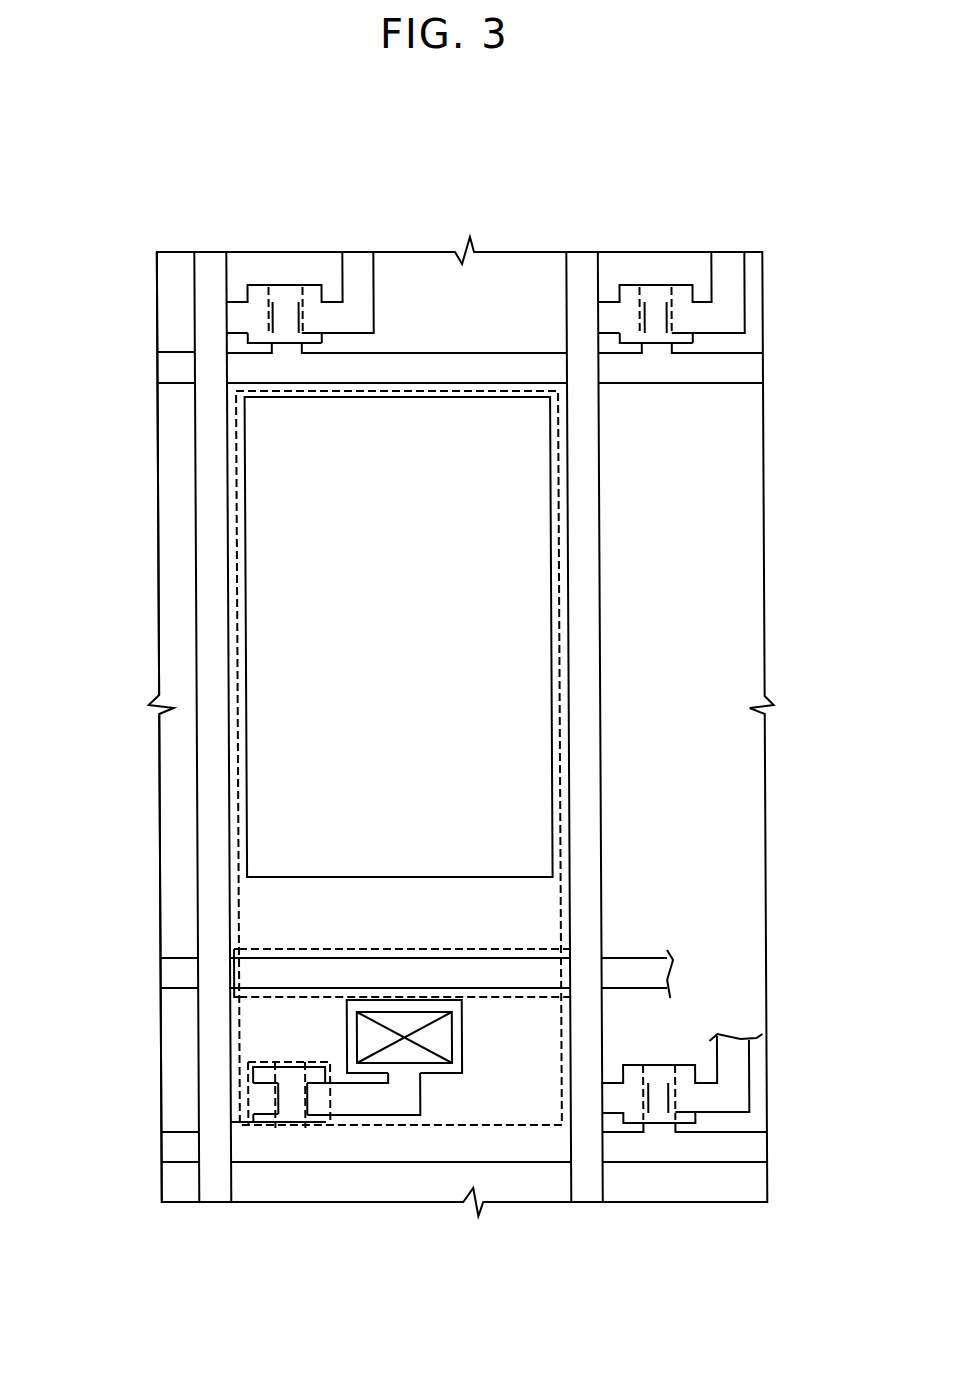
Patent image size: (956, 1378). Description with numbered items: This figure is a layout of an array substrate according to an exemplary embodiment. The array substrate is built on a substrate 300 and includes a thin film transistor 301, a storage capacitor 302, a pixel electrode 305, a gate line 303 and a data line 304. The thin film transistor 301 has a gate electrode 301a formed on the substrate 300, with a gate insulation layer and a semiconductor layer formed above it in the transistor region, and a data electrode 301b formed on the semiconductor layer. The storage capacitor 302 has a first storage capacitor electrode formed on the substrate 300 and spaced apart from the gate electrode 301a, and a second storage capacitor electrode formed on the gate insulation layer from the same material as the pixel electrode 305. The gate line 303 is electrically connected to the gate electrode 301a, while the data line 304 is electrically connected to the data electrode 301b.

The substrate 300 is at (177, 612).
The thin film transistor 301 is at (333, 1100).
The gate electrode 301a is at (283, 1107).
The data electrode 301b is at (264, 1100).
The storage capacitor 302 is at (272, 950).
The gate line 303 is at (167, 1148).
The data line 304 is at (222, 1178).
The pixel electrode 305 is at (508, 453).